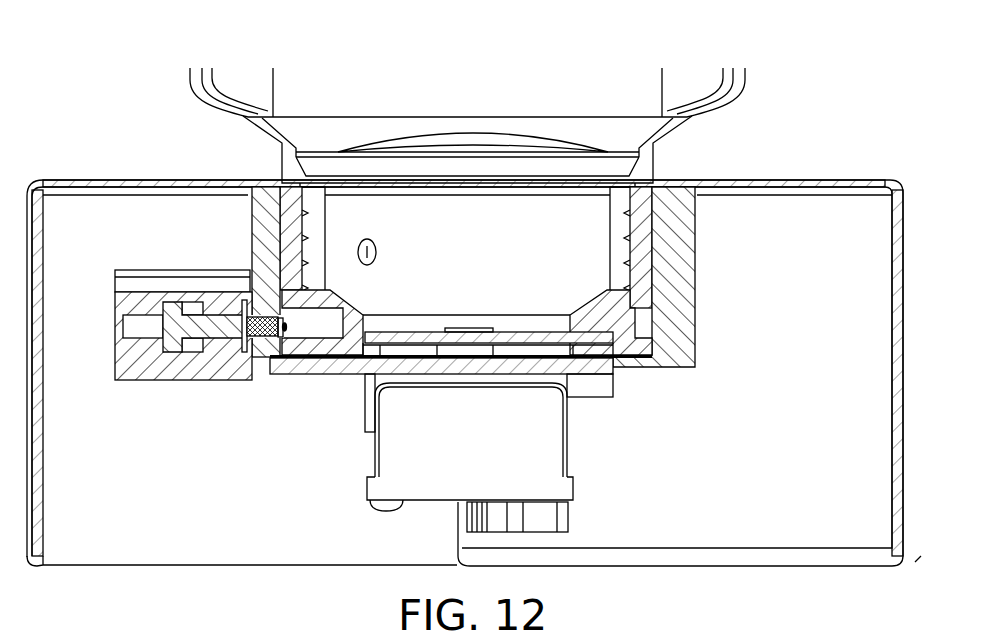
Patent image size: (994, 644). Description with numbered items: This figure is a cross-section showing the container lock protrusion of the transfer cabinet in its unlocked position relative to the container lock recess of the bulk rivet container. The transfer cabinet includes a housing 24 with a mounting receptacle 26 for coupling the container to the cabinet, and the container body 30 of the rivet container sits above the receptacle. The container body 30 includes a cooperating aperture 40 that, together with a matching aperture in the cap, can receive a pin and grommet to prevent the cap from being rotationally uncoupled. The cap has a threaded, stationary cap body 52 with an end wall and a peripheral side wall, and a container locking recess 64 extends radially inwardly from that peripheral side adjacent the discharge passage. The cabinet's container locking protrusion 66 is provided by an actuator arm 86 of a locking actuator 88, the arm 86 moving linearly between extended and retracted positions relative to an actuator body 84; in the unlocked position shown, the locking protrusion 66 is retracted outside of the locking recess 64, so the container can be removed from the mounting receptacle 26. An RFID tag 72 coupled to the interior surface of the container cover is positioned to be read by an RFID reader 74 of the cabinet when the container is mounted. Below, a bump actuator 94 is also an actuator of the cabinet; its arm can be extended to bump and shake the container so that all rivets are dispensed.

The housing 24 is at (837, 185).
The mounting receptacle 26 is at (673, 235).
The container body 30 is at (727, 98).
The cooperating aperture 40 is at (378, 252).
The cap body 52 is at (632, 184).
The container locking recess 64 is at (330, 316).
The container locking protrusion 66 is at (258, 337).
The RFID tag 72 is at (473, 327).
The RFID reader 74 is at (397, 485).
The actuator body 84 is at (147, 297).
The actuator arm 86 is at (222, 338).
The locking actuator 88 is at (183, 384).
The bump actuator 94 is at (563, 515).